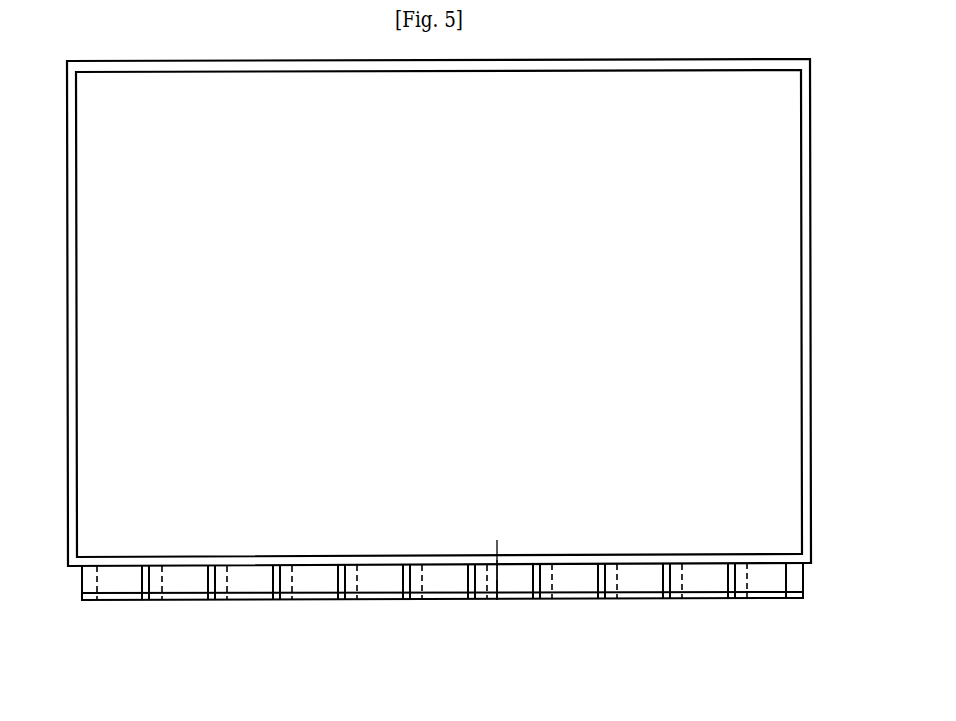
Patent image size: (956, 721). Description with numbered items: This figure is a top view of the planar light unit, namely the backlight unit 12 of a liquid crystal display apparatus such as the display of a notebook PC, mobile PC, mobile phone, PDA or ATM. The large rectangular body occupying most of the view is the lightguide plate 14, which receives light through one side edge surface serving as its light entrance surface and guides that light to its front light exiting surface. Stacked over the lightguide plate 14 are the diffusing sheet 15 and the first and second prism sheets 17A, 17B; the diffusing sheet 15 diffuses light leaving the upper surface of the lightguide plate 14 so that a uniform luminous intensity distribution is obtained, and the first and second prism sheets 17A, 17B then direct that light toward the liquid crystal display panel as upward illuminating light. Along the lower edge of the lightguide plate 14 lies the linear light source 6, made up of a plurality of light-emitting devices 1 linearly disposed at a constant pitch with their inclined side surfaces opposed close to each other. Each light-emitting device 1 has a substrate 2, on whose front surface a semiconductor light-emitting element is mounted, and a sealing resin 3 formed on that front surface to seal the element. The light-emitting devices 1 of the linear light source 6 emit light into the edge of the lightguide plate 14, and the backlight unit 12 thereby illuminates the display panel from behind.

The light-emitting device 1 is at (119, 603).
The substrate 2 is at (103, 600).
The sealing resin 3 is at (107, 582).
The linear light source 6 is at (309, 630).
The backlight unit 12 is at (729, 622).
The lightguide plate 14 is at (765, 370).
The diffusing sheet 15 is at (497, 600).
The first prism sheet 17A is at (533, 618).
The second prism sheet 17B is at (561, 628).